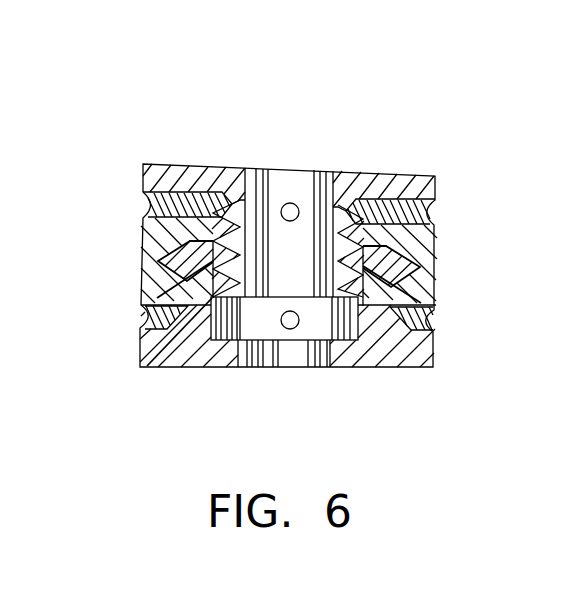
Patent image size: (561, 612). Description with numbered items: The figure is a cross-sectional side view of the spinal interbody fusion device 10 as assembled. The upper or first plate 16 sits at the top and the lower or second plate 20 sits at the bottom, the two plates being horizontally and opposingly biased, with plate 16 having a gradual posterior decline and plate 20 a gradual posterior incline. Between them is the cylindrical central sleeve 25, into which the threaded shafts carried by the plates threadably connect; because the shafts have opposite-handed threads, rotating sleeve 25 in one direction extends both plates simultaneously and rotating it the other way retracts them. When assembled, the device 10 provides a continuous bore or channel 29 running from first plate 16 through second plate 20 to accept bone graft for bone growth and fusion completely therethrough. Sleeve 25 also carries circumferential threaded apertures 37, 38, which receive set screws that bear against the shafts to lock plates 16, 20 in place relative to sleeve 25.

The spinal interbody fusion device 10 is at (399, 103).
The first plate 16 is at (195, 150).
The second plate 20 is at (155, 382).
The central sleeve 25 is at (124, 274).
The channel 29 is at (290, 385).
The threaded apertures 37 is at (447, 220).
The threaded apertures 38 is at (446, 318).